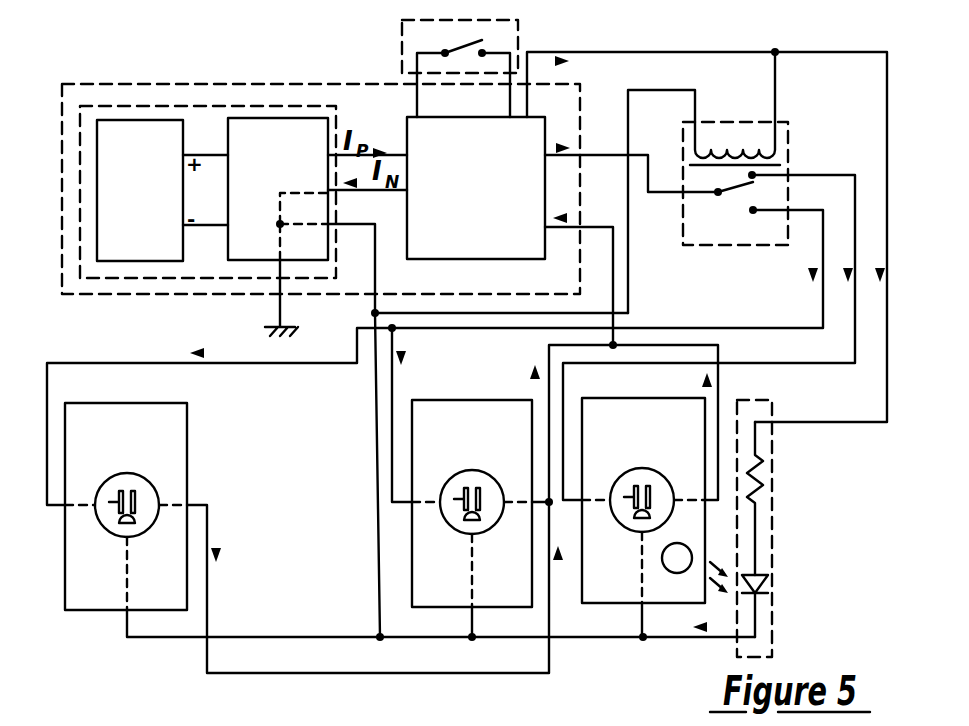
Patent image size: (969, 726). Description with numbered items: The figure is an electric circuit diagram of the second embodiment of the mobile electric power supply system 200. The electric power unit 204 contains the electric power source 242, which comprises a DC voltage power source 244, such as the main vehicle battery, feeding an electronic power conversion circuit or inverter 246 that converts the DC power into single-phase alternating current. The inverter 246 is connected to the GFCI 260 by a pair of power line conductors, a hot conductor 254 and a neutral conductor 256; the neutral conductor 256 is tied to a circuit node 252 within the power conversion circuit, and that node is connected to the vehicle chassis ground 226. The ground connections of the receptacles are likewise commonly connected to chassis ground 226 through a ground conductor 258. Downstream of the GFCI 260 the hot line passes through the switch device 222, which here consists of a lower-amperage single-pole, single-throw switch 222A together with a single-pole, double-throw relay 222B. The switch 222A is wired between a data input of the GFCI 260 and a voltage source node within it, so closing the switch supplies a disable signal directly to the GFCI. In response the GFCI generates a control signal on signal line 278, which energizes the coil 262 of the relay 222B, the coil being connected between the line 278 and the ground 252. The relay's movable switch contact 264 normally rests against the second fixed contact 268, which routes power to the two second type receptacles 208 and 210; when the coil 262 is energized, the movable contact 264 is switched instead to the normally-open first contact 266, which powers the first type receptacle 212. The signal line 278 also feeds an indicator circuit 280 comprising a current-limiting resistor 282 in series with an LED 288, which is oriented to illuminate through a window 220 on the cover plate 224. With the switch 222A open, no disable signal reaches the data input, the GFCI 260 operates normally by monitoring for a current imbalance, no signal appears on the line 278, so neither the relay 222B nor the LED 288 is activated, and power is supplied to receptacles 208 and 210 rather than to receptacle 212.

The mobile electric power supply system 200 is at (134, 72).
The electric power unit 204 is at (285, 84).
The electric power source 242 is at (248, 105).
The DC voltage power source 244 is at (164, 118).
The inverter 246 is at (322, 118).
The ground node 252 is at (280, 224).
The chassis ground 226 is at (276, 327).
The hot conductor 254 is at (400, 152).
The neutral conductor 256 is at (404, 191).
The ground conductor 258 is at (378, 278).
The GFCI 260 is at (428, 117).
The switch device 222 is at (402, 52).
The single-pole single-throw switch 222A is at (507, 22).
The single-pole double-throw relay 222B is at (728, 138).
The coil 262 is at (784, 146).
The movable switch contact 264 is at (745, 186).
The first contact 266 is at (768, 177).
The second contact 268 is at (753, 213).
The signal line 278 is at (618, 53).
The indicator circuit 280 is at (764, 400).
The current-limiting resistor 282 is at (762, 500).
The LED 288 is at (764, 588).
The cover plate 224 is at (641, 398).
The second type receptacle 208 is at (127, 473).
The second type receptacle 210 is at (471, 470).
The first type receptacle 212 is at (642, 468).
The window 220 is at (675, 573).